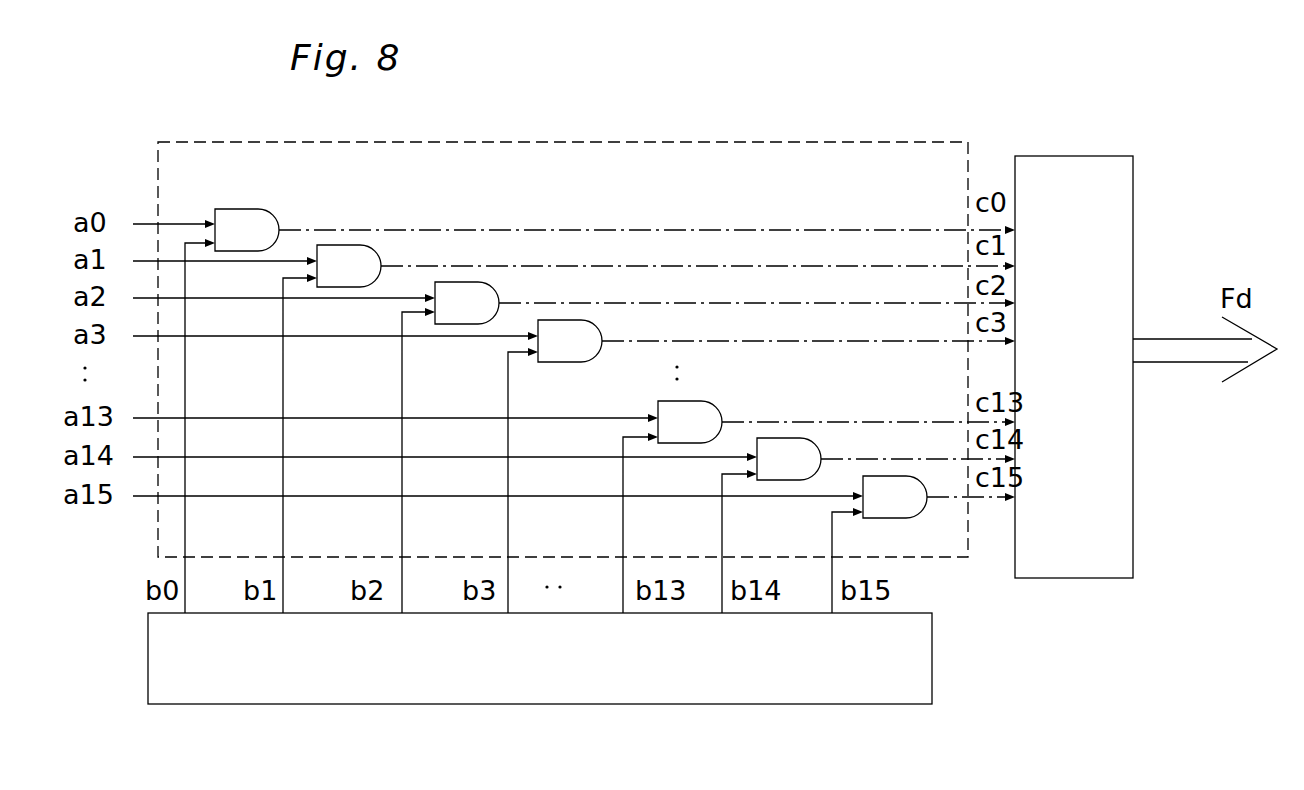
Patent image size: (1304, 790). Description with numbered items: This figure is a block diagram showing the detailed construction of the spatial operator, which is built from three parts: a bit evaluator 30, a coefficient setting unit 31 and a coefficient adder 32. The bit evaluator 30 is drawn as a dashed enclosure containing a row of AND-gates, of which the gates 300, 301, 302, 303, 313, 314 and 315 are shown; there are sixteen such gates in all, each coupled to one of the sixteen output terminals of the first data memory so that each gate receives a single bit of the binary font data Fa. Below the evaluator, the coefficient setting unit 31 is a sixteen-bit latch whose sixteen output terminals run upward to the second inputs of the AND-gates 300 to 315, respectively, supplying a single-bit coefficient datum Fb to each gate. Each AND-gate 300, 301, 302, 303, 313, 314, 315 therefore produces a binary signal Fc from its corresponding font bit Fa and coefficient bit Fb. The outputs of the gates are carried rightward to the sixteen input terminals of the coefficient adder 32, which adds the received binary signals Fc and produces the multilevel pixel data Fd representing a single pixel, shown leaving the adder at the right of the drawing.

The bit evaluator 30 is at (845, 142).
The coefficient setting unit 31 is at (932, 645).
The coefficient adder 32 is at (1133, 172).
The AND-gate 300 is at (255, 209).
The AND-gate 301 is at (357, 245).
The AND-gate 302 is at (475, 282).
The AND-gate 303 is at (578, 320).
The AND-gate 313 is at (698, 401).
The AND-gate 314 is at (797, 438).
The AND-gate 315 is at (875, 518).